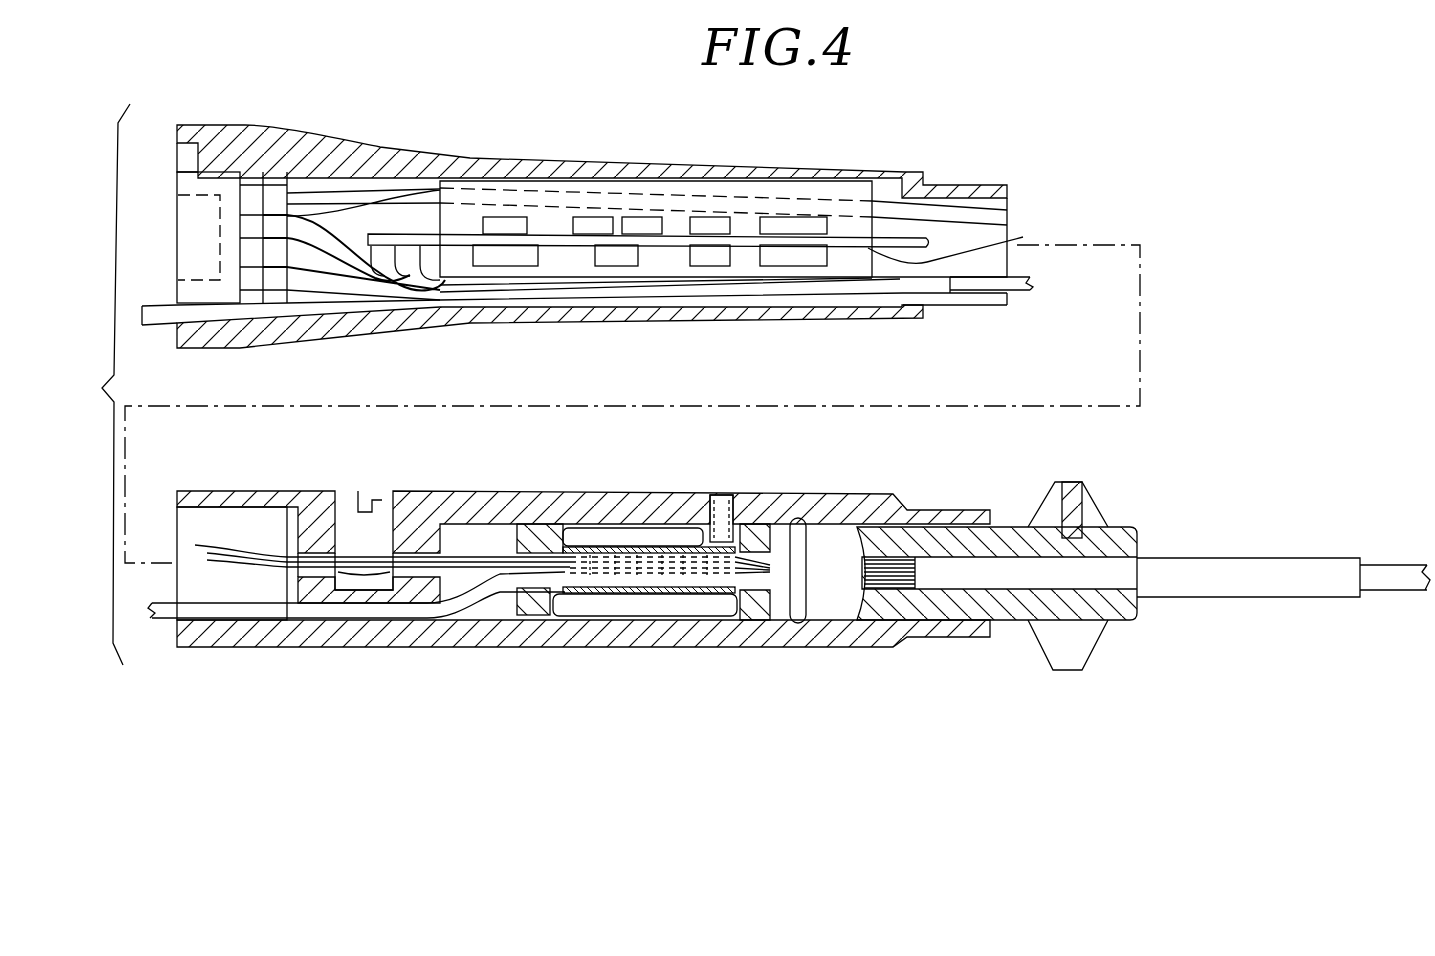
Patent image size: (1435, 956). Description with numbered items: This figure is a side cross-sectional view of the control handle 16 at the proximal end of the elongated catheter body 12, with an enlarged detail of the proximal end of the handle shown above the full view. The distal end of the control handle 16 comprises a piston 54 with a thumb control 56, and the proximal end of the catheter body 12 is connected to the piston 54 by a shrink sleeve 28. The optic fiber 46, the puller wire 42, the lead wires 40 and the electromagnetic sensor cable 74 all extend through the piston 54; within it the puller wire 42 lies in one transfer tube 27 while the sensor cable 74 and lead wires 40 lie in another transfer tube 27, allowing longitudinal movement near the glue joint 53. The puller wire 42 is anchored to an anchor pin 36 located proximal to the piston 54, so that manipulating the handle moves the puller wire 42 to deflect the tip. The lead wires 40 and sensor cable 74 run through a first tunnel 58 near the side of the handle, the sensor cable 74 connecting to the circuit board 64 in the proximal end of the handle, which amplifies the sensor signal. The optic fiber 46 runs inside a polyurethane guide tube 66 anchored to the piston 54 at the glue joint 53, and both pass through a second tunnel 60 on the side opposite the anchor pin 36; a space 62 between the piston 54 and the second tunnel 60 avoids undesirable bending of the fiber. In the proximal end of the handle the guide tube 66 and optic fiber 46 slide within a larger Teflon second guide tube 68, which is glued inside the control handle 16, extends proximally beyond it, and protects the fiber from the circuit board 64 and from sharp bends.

The catheter body 12 is at (1390, 575).
The control handle 16 is at (580, 133).
The transfer tube 27 is at (607, 573).
The shrink sleeve 28 is at (1263, 573).
The anchor pin 36 is at (367, 528).
The lead wires 40 is at (1007, 210).
The puller wire 42 is at (508, 560).
The optic fiber 46 is at (745, 595).
The glue joint 53 is at (653, 594).
The piston 54 is at (1018, 538).
The thumb control 56 is at (1090, 497).
The first tunnel 58 is at (308, 555).
The second tunnel 60 is at (333, 630).
The space 62 is at (458, 592).
The circuit board 64 is at (467, 222).
The guide tube 66 is at (1033, 281).
The second guide tube 68 is at (928, 290).
The sensor cable 74 is at (1023, 237).